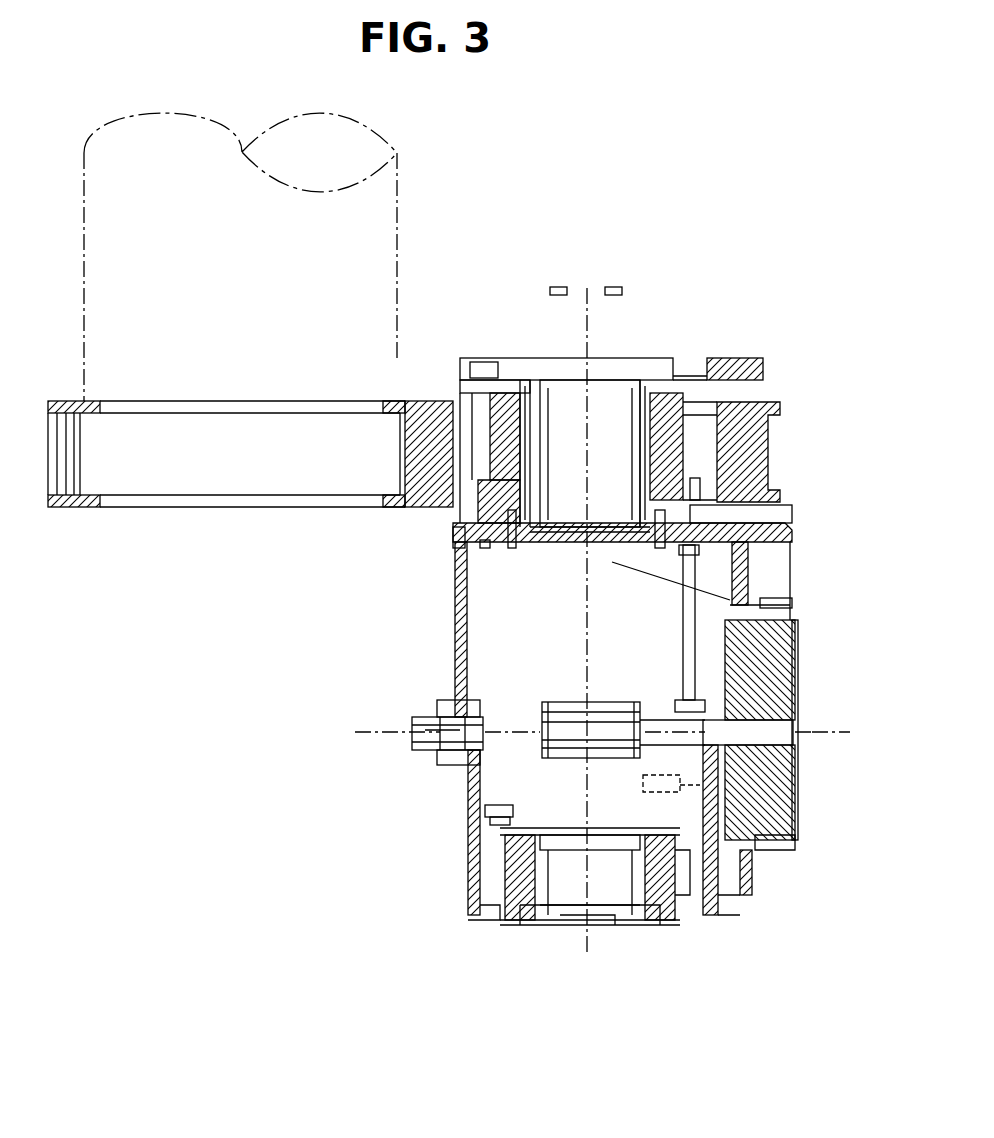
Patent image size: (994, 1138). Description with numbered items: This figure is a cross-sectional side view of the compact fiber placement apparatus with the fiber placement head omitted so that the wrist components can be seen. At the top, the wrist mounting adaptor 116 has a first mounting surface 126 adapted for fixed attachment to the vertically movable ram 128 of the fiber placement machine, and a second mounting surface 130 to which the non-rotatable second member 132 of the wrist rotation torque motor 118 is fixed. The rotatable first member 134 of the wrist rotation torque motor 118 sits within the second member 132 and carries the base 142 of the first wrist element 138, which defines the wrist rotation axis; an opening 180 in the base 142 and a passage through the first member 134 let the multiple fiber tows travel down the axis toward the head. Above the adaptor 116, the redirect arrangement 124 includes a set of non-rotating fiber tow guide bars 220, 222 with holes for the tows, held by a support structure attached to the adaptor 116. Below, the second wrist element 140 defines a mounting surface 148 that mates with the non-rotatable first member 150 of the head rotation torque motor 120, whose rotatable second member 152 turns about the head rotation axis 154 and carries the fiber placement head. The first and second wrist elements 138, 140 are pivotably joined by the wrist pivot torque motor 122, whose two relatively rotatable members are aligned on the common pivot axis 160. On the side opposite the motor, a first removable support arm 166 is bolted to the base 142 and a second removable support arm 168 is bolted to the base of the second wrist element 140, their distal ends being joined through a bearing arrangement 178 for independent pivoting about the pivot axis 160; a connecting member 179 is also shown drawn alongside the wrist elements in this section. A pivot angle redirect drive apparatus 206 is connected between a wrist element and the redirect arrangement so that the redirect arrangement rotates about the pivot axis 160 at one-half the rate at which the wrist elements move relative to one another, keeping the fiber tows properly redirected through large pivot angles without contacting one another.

The wrist mounting adaptor 116 is at (54, 400).
The wrist rotation torque motor 118 is at (505, 518).
The head rotation torque motor 120 is at (515, 920).
The wrist pivot torque motor 122 is at (780, 657).
The redirect arrangement 124 is at (515, 770).
The first mounting surface 126 is at (372, 402).
The shaft 128 is at (385, 209).
The second mounting surface 130 is at (735, 470).
The second member of the wrist rotation torque motor 132 is at (700, 440).
The first member of the wrist rotation torque motor 134 is at (525, 545).
The first wrist element 138 is at (775, 530).
The second wrist element 140 is at (718, 910).
The base of the first wrist element 142 is at (786, 516).
The mounting surface of the second wrist element 148 is at (618, 938).
The first member of the head rotation torque motor 150 is at (500, 880).
The second member of the head rotation torque motor 152 is at (548, 918).
The head rotation axis 154 is at (590, 945).
The common pivot axis 160 is at (378, 730).
The first removable support arm 166 is at (455, 648).
The second removable support arm 168 is at (468, 828).
The bearing arrangement 178 is at (430, 750).
The rod 179 is at (690, 655).
The opening in the base of the first wrist element 180 is at (610, 532).
The pivot angle redirect drive apparatus 206 is at (643, 786).
The non-rotating fiber tow guide bar 220 is at (626, 291).
The non-rotatable fiber tow guide bar 222 is at (546, 291).